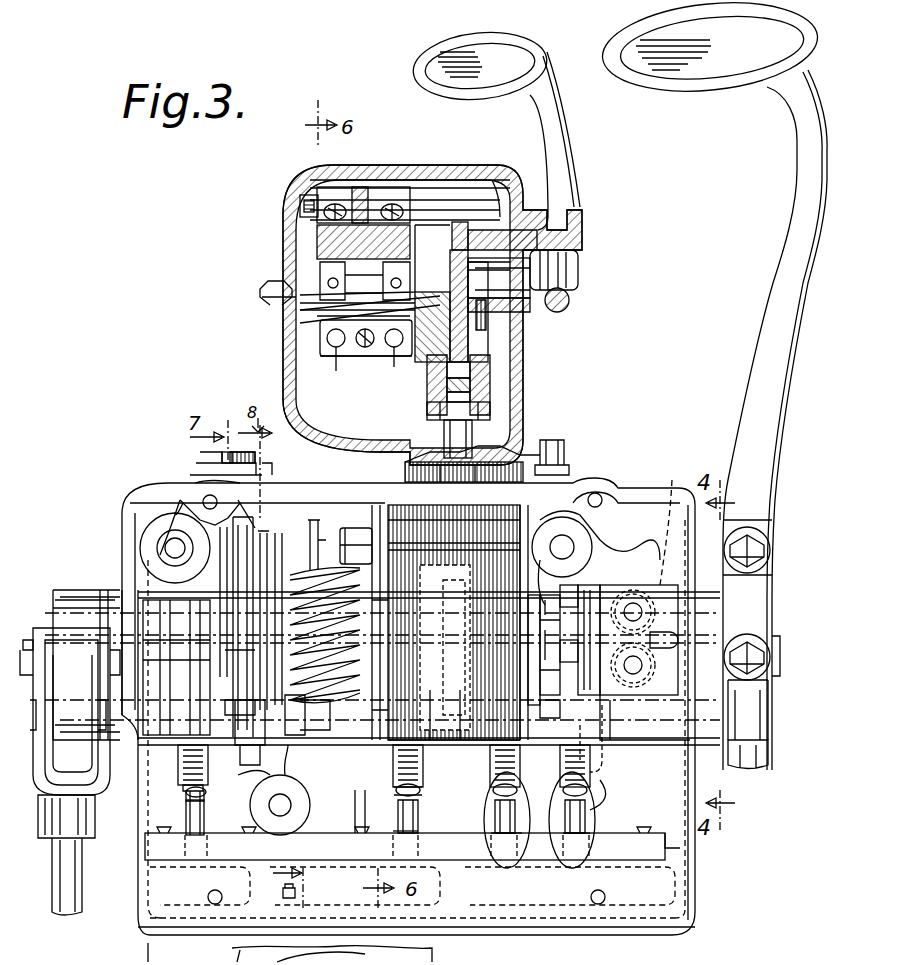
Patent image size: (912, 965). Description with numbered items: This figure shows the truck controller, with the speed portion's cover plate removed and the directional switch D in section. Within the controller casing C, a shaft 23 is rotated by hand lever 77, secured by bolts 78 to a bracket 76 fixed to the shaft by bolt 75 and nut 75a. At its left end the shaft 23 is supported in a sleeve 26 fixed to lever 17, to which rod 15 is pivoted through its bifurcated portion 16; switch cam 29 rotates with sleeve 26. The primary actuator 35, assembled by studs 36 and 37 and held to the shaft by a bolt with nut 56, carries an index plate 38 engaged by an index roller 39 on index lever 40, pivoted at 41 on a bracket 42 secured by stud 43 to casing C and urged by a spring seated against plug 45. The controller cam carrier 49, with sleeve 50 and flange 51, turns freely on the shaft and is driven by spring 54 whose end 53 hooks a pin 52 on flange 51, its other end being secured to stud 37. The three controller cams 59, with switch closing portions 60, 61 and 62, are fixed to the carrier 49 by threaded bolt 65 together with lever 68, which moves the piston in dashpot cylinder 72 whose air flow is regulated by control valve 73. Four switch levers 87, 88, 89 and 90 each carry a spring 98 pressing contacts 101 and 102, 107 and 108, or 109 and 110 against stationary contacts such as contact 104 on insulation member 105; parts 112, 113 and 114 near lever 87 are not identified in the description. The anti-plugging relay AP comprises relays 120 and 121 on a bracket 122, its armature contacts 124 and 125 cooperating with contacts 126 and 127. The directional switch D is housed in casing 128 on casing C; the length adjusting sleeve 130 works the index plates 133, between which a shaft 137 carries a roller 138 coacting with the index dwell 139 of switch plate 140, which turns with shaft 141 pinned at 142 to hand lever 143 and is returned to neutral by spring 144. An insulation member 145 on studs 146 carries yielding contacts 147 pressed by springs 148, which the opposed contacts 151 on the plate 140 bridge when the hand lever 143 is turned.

The hand lever 143 is at (552, 112).
The casing 128 is at (420, 165).
The spring 144 is at (486, 212).
The studs 146 is at (302, 205).
The insulation member 145 is at (320, 232).
The springs 148 is at (322, 268).
The yielding contacts 147 is at (345, 345).
The opposed contacts 151 is at (394, 345).
The switch plate 140 is at (470, 330).
The index dwell 139 is at (480, 358).
The directional switch D is at (538, 363).
The shaft 141 is at (530, 272).
The pin 142 is at (570, 298).
The index plates 133 is at (490, 385).
The shaft 137 is at (447, 404).
The roller 138 is at (445, 428).
The length adjusting sleeve 130 is at (475, 425).
The control valve 73 is at (462, 460).
The dashpot cylinder 72 is at (470, 500).
The relay 120 is at (667, 524).
The anti-plugging relay AP is at (600, 535).
The controller casing C is at (695, 872).
The insulation member 105 is at (330, 845).
The contact 104 is at (408, 820).
The pivot 41 is at (152, 572).
The index lever 40 is at (205, 540).
The index plate 38 is at (200, 495).
The plug 45 is at (210, 465).
The stud 43 is at (256, 448).
The stud 36 is at (222, 620).
The bracket 42 is at (250, 548).
The primary actuator 35 is at (282, 575).
The pin 52 is at (312, 520).
The end of spring 53 is at (320, 530).
The controller cam carrier 49 is at (385, 590).
The sleeve 50 is at (439, 647).
The flange 51 is at (382, 545).
The spring 54 is at (375, 665).
The switch closing portion 60 is at (420, 720).
The controller cams 59 is at (530, 595).
The switch closing portion 61 is at (508, 710).
The switch closing portion 62 is at (570, 715).
The contact 124 is at (560, 612).
The contact 125 is at (548, 605).
The contact 126 is at (580, 598).
The contact 127 is at (596, 612).
The bracket 122 is at (665, 612).
The relay 121 is at (655, 700).
The threaded bolt 65 is at (602, 744).
The sleeve 26 is at (120, 600).
The lever 17 is at (60, 625).
The switch cam 29 is at (207, 656).
The index roller 39 is at (228, 660).
The stud 37 is at (330, 740).
The nut 56 is at (285, 752).
The switch lever 87 is at (244, 786).
The bifurcated portion 16 is at (82, 770).
The rod 15 is at (78, 872).
The spring housing 112 is at (180, 735).
The spring 98 is at (393, 757).
The washer 114 is at (186, 790).
The plunger 113 is at (188, 800).
The switch lever 88 is at (384, 790).
The contact 102 is at (420, 790).
The contact 101 is at (418, 805).
The lever 68 is at (490, 790).
The switch lever 89 is at (552, 782).
The switch lever 90 is at (594, 788).
The contact 108 is at (507, 829).
The contact 107 is at (507, 869).
The contact 110 is at (571, 829).
The contact 109 is at (569, 869).
The hand lever 77 is at (780, 303).
The bolts 78 is at (770, 662).
The bracket 76 is at (772, 585).
The shaft 23 is at (780, 640).
The nut 75a is at (768, 738).
The bolt 75 is at (748, 765).